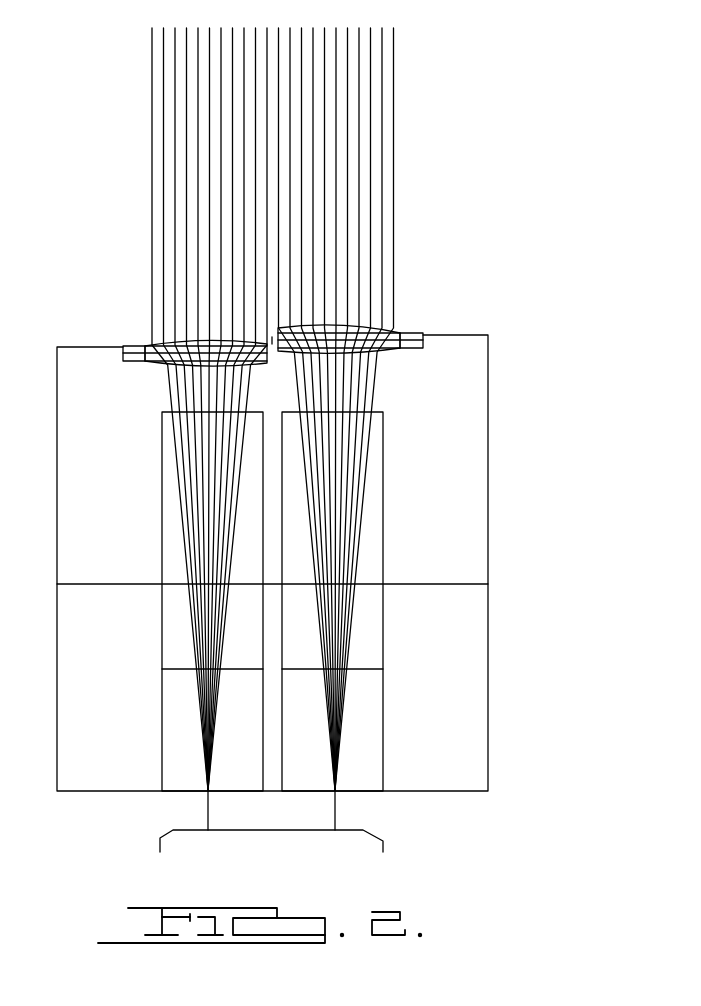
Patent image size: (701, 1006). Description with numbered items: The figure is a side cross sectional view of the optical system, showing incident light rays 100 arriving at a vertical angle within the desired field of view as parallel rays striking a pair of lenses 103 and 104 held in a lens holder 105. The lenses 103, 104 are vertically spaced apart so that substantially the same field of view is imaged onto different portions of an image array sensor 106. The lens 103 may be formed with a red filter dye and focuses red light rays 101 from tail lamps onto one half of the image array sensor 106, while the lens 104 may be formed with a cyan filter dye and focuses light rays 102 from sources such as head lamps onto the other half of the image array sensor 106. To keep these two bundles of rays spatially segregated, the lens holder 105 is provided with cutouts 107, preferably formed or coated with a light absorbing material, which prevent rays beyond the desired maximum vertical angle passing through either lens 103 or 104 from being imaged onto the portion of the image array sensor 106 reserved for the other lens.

The light rays 100 is at (418, 174).
The red light rays 101 is at (378, 490).
The light rays 102 is at (160, 503).
The lens 103 is at (415, 318).
The lens 104 is at (136, 327).
The lens holder 105 is at (57, 755).
The image array sensor 106 is at (363, 831).
The cutouts 107 is at (398, 638).